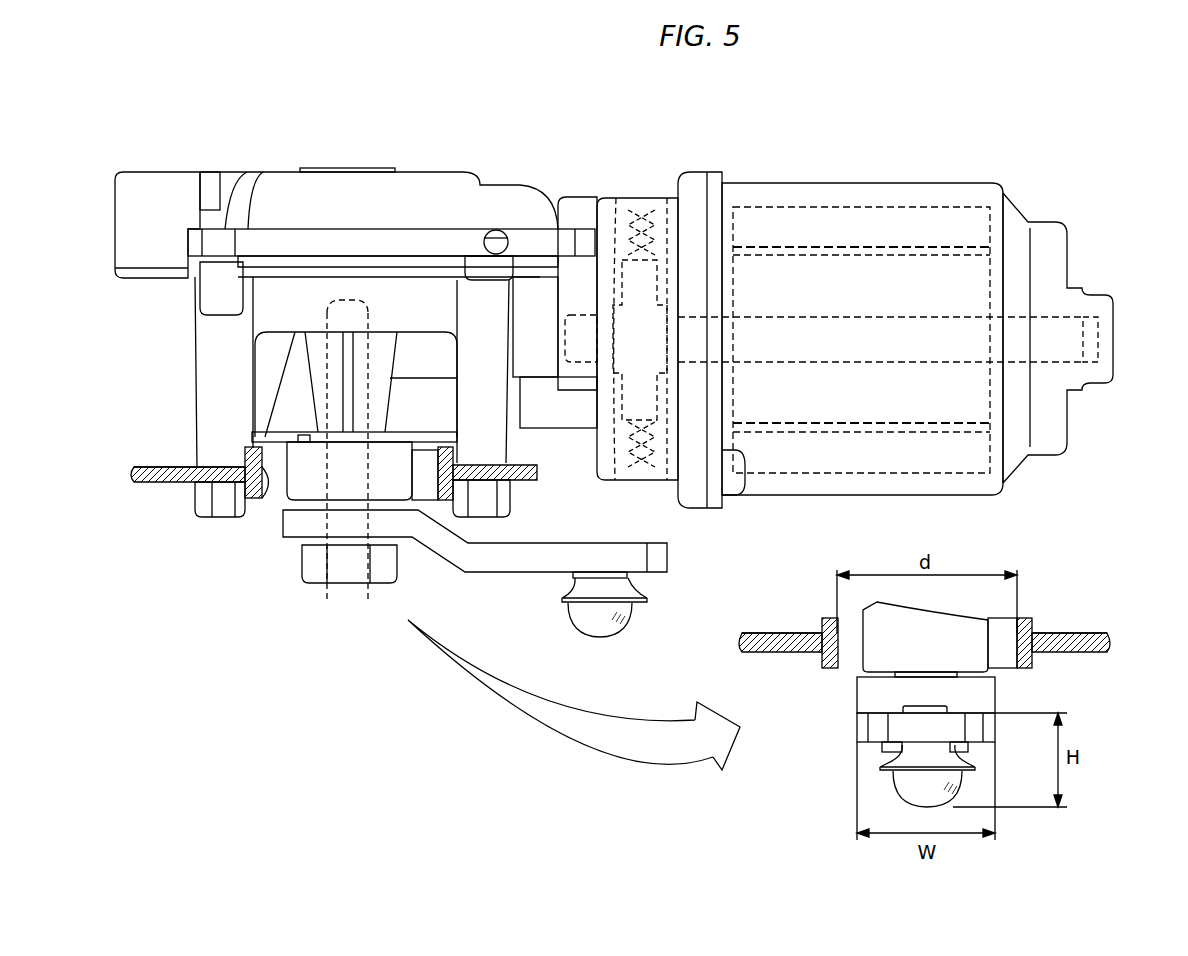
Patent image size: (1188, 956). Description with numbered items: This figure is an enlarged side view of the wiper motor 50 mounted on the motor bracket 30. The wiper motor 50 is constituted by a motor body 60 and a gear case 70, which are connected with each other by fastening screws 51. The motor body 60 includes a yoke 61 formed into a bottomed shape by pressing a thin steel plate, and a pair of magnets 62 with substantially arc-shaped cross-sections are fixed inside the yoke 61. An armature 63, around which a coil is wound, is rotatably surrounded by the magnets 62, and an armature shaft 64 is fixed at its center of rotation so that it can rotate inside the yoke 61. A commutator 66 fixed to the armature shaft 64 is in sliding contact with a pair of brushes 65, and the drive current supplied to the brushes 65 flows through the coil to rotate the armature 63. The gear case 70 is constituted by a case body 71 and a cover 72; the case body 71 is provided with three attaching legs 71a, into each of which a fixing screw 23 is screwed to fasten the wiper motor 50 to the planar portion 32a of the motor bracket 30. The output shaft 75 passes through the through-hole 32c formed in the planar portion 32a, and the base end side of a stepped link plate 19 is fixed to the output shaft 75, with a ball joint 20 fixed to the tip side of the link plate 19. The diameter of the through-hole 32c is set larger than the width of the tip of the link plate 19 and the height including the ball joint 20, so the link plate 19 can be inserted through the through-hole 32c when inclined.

The gear case 70 is at (232, 160).
The cover 72 is at (345, 212).
The case body 71 is at (293, 310).
The attaching legs 71a is at (472, 345).
The wiper motor 50 is at (520, 160).
The brushes 65 is at (667, 198).
The commutator 66 is at (614, 198).
The fastening screws 51 is at (735, 498).
The motor body 60 is at (810, 170).
The magnets 62 is at (880, 207).
The yoke 61 is at (1017, 230).
The armature 63 is at (947, 282).
The armature shaft 64 is at (1050, 348).
The motor bracket 30 is at (167, 494).
The planar portion 32a is at (150, 467).
The through-hole 32c is at (270, 470).
The fixing screws 23 is at (227, 505).
The output shaft 75 is at (340, 452).
The link plate 19 is at (505, 562).
The ball joint 20 is at (597, 622).